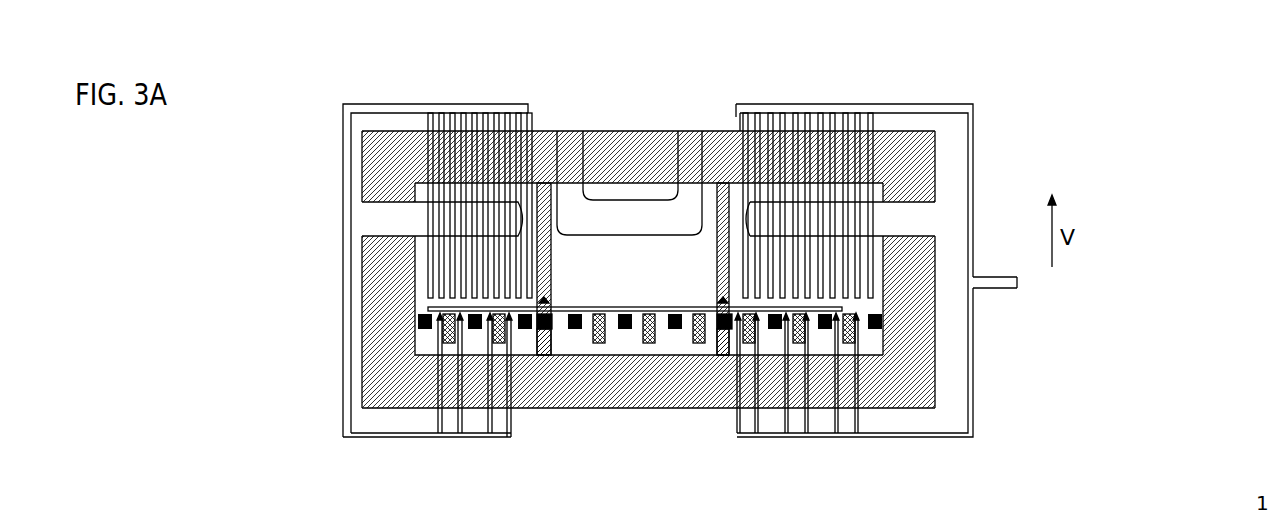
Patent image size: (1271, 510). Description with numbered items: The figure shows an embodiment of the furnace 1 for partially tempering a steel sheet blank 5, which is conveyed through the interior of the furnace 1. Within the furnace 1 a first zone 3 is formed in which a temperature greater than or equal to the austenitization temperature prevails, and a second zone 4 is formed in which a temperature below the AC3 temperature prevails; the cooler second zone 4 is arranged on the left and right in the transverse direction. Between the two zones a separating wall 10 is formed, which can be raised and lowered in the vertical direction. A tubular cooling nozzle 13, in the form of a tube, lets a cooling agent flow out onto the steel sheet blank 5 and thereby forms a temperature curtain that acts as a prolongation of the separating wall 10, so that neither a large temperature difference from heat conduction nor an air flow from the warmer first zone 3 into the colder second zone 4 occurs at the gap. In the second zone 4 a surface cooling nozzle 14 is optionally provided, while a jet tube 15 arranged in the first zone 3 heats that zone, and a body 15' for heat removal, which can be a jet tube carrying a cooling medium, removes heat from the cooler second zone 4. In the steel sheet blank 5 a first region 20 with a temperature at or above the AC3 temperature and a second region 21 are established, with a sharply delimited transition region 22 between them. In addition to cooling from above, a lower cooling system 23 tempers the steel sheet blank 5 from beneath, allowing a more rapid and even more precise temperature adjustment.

The furnace 1 is at (1022, 116).
The first zone 3 is at (604, 286).
The second zone 4 is at (427, 268).
The steel sheet blank 5 is at (643, 297).
The separating wall 10 is at (540, 218).
The tubular cooling nozzle 13 is at (544, 297).
The surface cooling nozzle 14 is at (520, 113).
The jet tube 15 is at (629, 154).
The body for heat removal 15' is at (628, 130).
The first region 20 is at (603, 357).
The second region 21 is at (487, 430).
The transition region 22 is at (540, 357).
The lower cooling system 23 is at (509, 407).